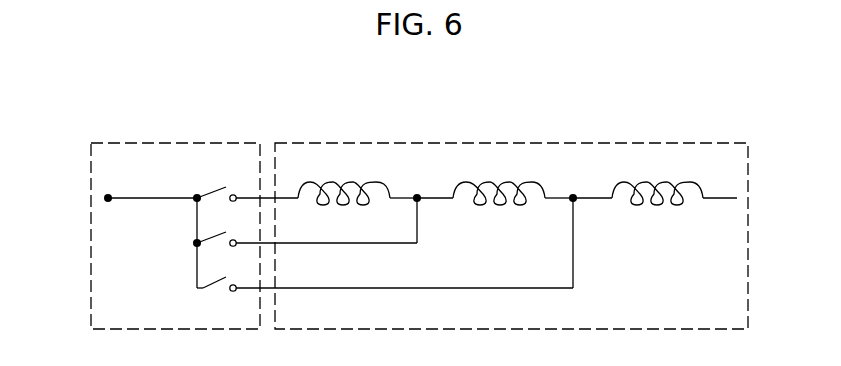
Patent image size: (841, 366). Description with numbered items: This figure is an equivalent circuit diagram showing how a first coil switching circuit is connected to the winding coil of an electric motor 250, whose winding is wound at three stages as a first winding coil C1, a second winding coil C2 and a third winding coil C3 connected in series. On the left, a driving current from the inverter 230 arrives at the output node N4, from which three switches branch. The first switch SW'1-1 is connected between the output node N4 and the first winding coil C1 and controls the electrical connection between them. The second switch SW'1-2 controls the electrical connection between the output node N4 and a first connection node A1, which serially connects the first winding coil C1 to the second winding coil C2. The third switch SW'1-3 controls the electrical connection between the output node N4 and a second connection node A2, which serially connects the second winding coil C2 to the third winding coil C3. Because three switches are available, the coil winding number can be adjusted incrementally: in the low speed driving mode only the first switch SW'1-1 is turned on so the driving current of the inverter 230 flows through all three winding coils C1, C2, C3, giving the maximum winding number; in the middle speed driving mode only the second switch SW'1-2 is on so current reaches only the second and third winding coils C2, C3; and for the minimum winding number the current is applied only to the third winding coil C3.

The inverter 230 is at (176, 141).
The electric motor 250 is at (487, 142).
The output node N4 is at (105, 197).
The 1-1st switch SW'1-1 is at (236, 182).
The 1-2nd switch SW'1-2 is at (262, 226).
The 1-3rd switch SW'1-3 is at (374, 281).
The first connection node A1 is at (416, 194).
The second connection node A2 is at (574, 194).
The first winding coil C1 is at (357, 179).
The second winding coil C2 is at (513, 179).
The third winding coil C3 is at (674, 179).